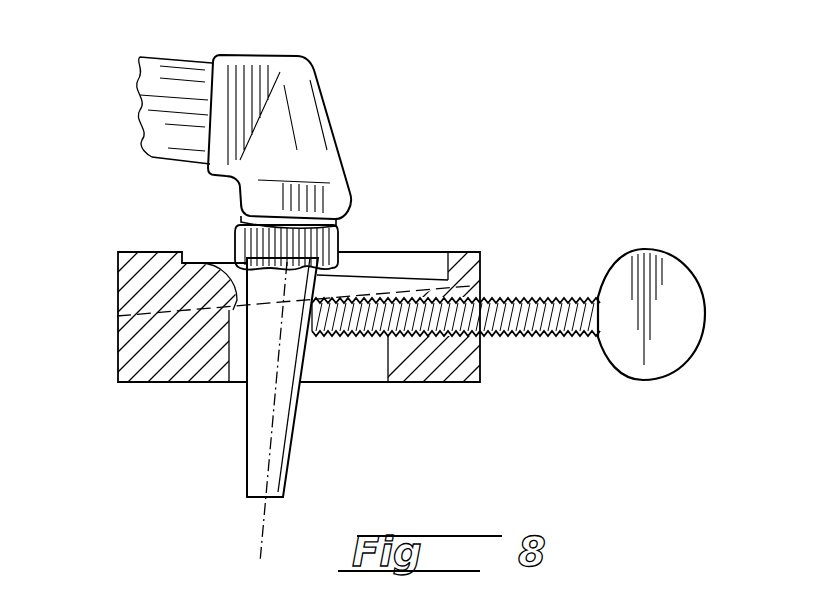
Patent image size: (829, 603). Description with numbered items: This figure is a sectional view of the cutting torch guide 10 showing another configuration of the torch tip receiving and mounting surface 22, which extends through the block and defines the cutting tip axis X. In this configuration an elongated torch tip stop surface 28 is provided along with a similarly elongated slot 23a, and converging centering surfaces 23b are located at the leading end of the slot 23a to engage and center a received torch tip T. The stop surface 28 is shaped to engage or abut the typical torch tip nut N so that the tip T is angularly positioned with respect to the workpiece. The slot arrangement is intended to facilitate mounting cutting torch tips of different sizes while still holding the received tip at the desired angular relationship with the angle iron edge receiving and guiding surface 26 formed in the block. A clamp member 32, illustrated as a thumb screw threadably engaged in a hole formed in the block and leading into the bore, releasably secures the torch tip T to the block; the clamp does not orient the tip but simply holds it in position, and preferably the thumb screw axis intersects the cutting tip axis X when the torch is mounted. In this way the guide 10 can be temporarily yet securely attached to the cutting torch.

The cutting torch guide 10 is at (528, 238).
The torch tip receiving and mounting surface 22 is at (417, 252).
The elongated slot 23a is at (344, 377).
The converging centering surfaces 23b is at (237, 382).
The angle iron edge receiving and guiding surface 26 is at (118, 336).
The torch tip stop surface 28 is at (205, 250).
The clamp member 32 is at (675, 342).
The torch tip nut N is at (337, 236).
The torch tip T is at (278, 418).
The cutting tip axis X is at (262, 519).